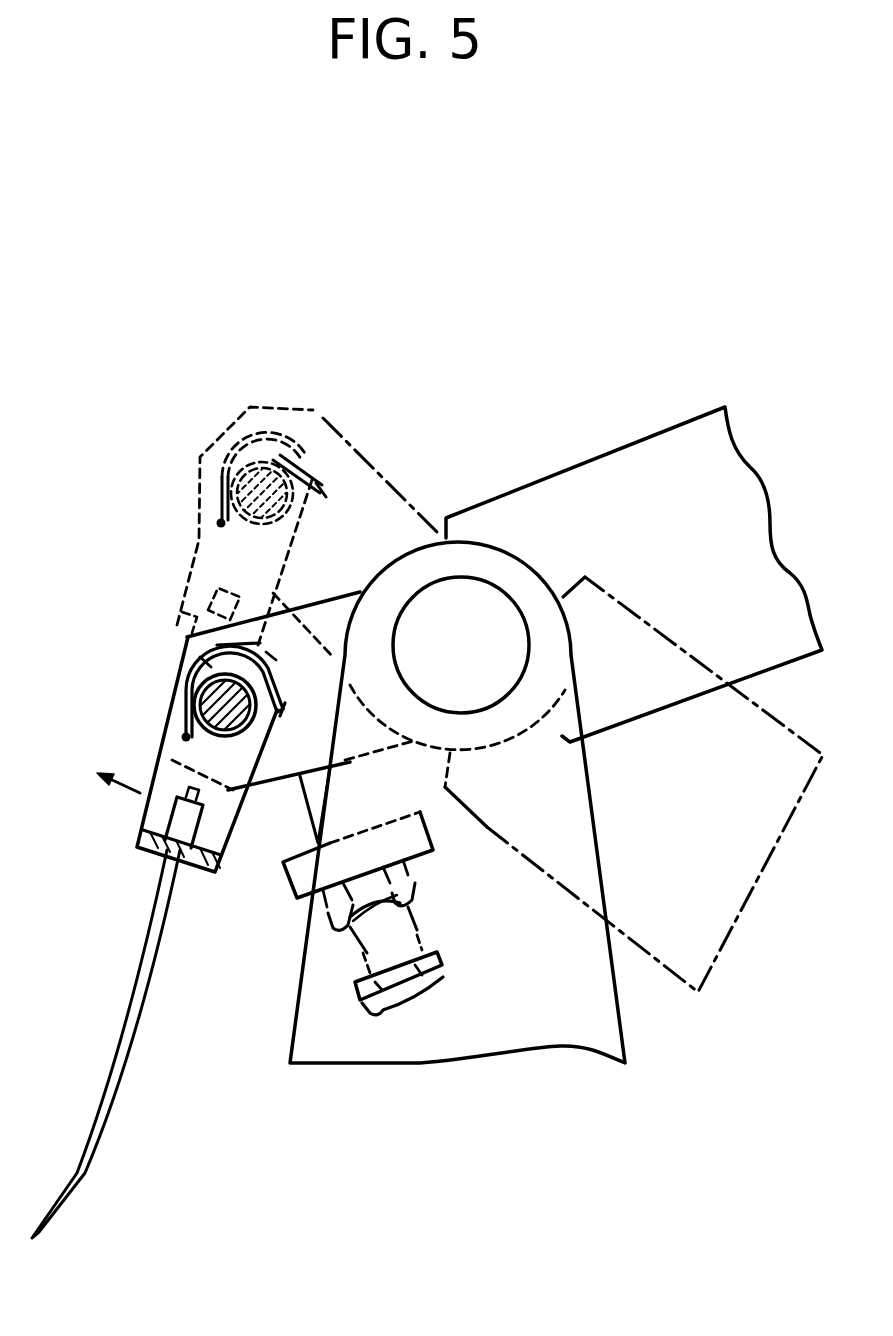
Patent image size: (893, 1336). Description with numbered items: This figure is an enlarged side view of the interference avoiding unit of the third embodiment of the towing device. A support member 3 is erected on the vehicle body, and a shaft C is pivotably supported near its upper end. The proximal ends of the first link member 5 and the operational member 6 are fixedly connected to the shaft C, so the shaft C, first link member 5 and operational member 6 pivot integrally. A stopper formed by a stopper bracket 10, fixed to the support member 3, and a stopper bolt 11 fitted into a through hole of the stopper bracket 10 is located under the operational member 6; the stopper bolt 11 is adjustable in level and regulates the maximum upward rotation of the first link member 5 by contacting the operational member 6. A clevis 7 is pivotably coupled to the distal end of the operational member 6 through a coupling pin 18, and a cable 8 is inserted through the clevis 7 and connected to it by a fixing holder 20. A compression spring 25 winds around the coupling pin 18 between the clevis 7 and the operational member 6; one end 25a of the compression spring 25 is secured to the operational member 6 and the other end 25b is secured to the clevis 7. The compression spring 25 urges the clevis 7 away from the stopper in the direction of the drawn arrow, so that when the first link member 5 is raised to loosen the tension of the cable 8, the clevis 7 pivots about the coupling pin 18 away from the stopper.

The support member 3 is at (560, 1023).
The first link member 5 is at (592, 492).
The operational member 6 is at (283, 763).
The clevis 7 is at (160, 782).
The cable 8 is at (127, 1030).
The stopper bracket 10 is at (427, 843).
The stopper bolt 11 is at (393, 923).
The coupling pin 18 is at (257, 716).
The fixing holder 20 is at (180, 822).
The compression spring 25 is at (183, 680).
The one end of the compression spring 25a is at (276, 702).
The other end of the compression spring 25b is at (183, 735).
The shaft C is at (458, 593).